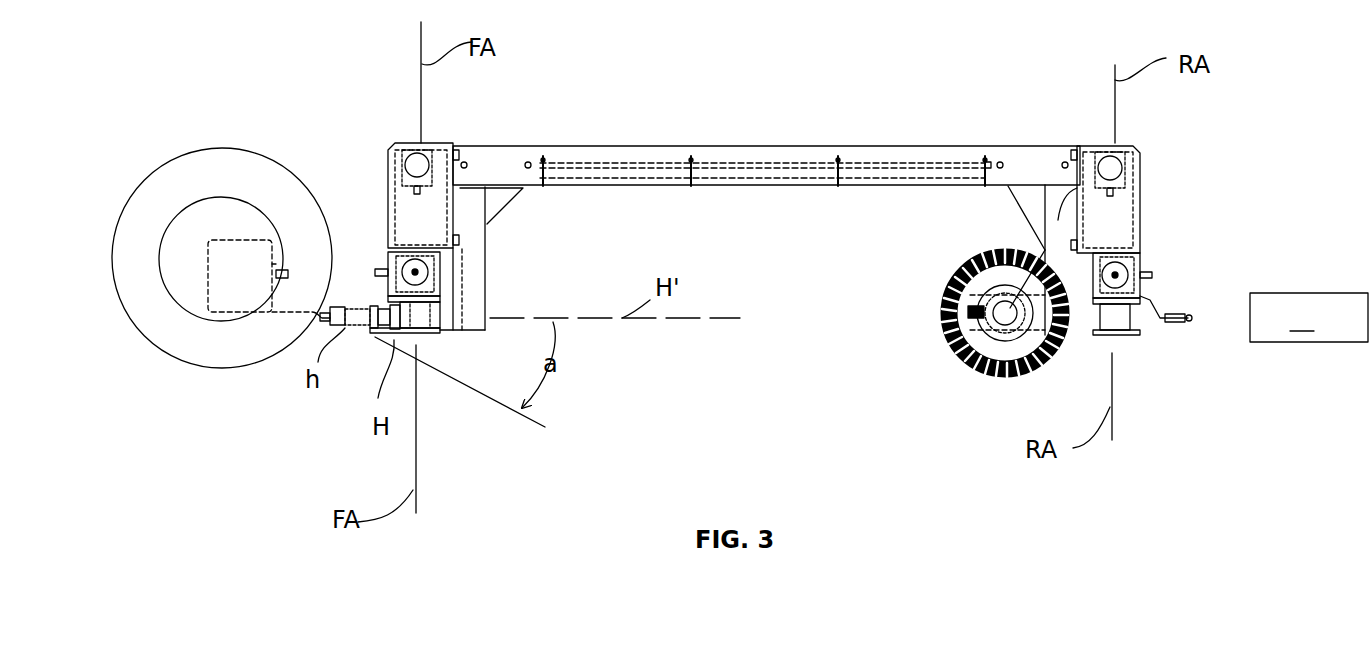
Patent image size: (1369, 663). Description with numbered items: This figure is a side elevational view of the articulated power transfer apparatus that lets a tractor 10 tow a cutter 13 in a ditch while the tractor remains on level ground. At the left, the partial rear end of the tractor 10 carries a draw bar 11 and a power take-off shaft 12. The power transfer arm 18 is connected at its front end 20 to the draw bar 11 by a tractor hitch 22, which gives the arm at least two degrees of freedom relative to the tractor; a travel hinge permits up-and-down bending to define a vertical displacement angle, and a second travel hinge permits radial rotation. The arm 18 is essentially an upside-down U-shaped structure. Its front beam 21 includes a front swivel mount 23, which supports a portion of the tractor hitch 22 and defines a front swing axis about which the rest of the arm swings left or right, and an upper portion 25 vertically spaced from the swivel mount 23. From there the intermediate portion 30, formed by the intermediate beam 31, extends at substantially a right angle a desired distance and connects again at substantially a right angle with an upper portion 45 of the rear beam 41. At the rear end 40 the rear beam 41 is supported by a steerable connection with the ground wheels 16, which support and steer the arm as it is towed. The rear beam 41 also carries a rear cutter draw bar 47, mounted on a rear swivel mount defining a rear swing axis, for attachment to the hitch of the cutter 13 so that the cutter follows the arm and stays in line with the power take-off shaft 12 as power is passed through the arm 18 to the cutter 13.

The tractor 10 is at (180, 122).
The draw bar 11 is at (293, 315).
The power take-off shaft 12 is at (283, 275).
The cutter 13 is at (1250, 318).
The ground wheels 16 is at (978, 372).
The power transfer arm 18 is at (652, 115).
The front end 20 is at (375, 128).
The front beam 21 is at (470, 247).
The tractor hitch 22 is at (352, 283).
The front swivel mount 23 is at (425, 342).
The upper portion 25 is at (468, 198).
The intermediate portion 30 is at (892, 137).
The intermediate beam 31 is at (765, 147).
The rear end 40 is at (1033, 224).
The rear beam 41 is at (1057, 218).
The upper portion 45 is at (1060, 212).
The rear cutter draw bar 47 is at (1168, 308).